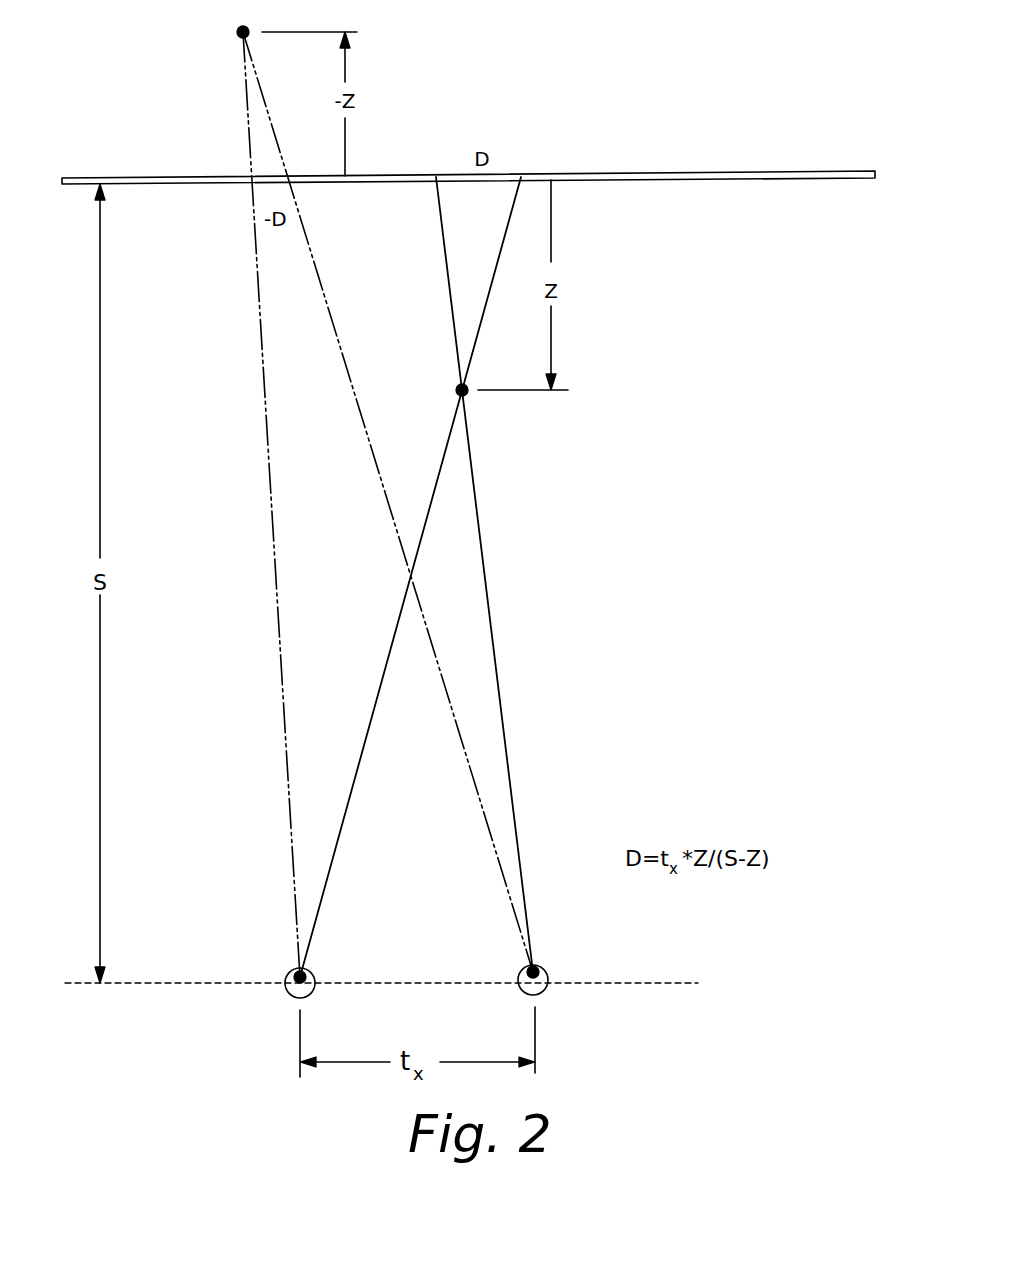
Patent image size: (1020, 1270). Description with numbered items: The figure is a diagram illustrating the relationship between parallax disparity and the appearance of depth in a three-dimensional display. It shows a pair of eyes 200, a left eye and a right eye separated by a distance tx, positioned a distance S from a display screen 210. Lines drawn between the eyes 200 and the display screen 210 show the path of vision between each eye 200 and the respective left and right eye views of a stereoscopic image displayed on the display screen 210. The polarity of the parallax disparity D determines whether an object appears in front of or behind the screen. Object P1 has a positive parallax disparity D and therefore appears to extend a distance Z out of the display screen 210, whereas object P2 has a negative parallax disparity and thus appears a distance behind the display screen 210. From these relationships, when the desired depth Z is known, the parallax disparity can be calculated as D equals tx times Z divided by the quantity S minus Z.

The display screen 210 is at (732, 171).
The pair of eyes 200 is at (288, 998).
The object with positive parallax disparity P1 is at (446, 391).
The object with negative parallax disparity P2 is at (228, 21).